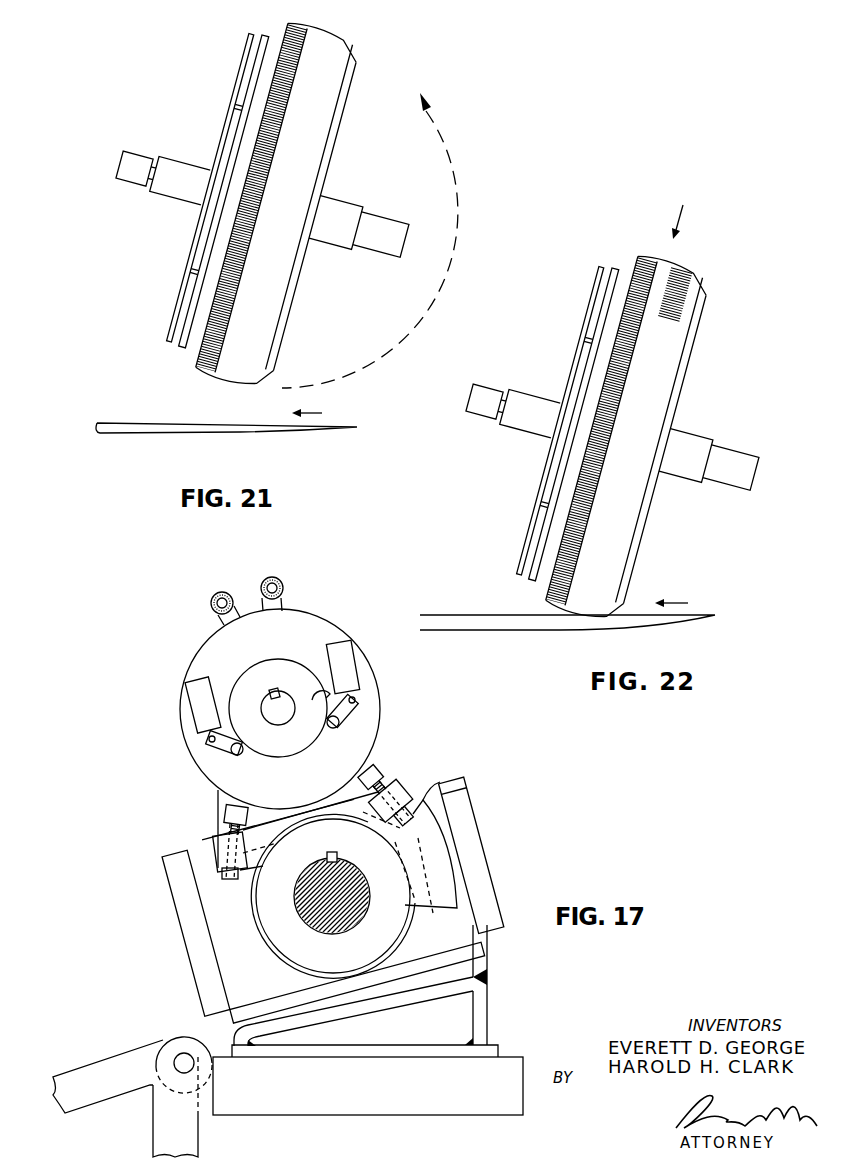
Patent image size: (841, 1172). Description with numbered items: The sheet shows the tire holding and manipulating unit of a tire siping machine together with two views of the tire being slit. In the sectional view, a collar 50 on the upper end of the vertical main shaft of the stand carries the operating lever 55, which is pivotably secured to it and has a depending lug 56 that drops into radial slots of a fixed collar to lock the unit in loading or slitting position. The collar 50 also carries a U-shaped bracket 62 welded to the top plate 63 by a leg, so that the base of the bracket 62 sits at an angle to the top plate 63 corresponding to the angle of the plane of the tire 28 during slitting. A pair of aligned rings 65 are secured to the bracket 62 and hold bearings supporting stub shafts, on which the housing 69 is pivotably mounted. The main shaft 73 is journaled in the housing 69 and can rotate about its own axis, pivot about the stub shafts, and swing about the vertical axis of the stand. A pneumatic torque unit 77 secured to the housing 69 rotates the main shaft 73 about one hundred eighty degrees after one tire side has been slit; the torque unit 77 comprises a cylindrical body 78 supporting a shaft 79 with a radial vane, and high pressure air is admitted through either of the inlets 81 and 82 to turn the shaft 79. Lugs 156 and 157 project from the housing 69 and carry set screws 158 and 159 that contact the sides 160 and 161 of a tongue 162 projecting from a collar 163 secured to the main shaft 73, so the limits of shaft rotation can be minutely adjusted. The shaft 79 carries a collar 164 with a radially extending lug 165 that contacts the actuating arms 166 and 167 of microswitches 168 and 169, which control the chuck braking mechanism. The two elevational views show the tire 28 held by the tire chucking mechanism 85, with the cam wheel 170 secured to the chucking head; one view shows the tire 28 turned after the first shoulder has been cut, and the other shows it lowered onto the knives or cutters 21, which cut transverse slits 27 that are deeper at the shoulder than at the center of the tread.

In FIG. 21, the knives or cutters 21 is at (100, 425).
In FIG. 22, the knives or cutters 21 is at (495, 620).
In FIG. 21, the slits 27 is at (202, 368).
In FIG. 22, the slits 27 is at (690, 277).
In FIG. 21, the tire 28 is at (343, 99).
In FIG. 22, the tire 28 is at (673, 391).
In FIG. 17, the collar 50 is at (510, 1070).
In FIG. 17, the operating lever 55 is at (105, 1070).
In FIG. 17, the depending lug 56 is at (158, 1134).
In FIG. 17, the U-shaped bracket 62 is at (423, 992).
In FIG. 17, the top plate 63 is at (488, 1049).
In FIG. 17, the aligned rings 65 is at (193, 944).
In FIG. 17, the housing 69 is at (286, 975).
In FIG. 17, the main shaft 73 is at (348, 888).
In FIG. 17, the pneumatic torque unit 77 is at (279, 685).
In FIG. 17, the cylindrical body 78 is at (198, 640).
In FIG. 17, the shaft 79 is at (268, 705).
In FIG. 17, the inlet 81 is at (275, 586).
In FIG. 17, the inlet 82 is at (216, 599).
In FIG. 21, the tire chucking mechanism 85 is at (200, 229).
In FIG. 22, the tire chucking mechanism 85 is at (543, 462).
In FIG. 17, the lug 156 is at (217, 838).
In FIG. 17, the lug 157 is at (400, 790).
In FIG. 17, the set screw 158 is at (228, 812).
In FIG. 17, the set screw 159 is at (374, 772).
In FIG. 17, the side of tongue 160 is at (461, 796).
In FIG. 17, the side of tongue 161 is at (433, 910).
In FIG. 17, the tongue 162 is at (435, 850).
In FIG. 17, the collar 163 is at (290, 933).
In FIG. 17, the collar 164 is at (288, 752).
In FIG. 17, the radially extending lug 165 is at (320, 698).
In FIG. 17, the actuating arm 166 is at (353, 712).
In FIG. 17, the actuating arm 167 is at (218, 750).
In FIG. 17, the microswitch 168 is at (350, 676).
In FIG. 17, the microswitch 169 is at (198, 710).
In FIG. 21, the cam wheel 170 is at (229, 130).
In FIG. 22, the cam wheel 170 is at (583, 333).